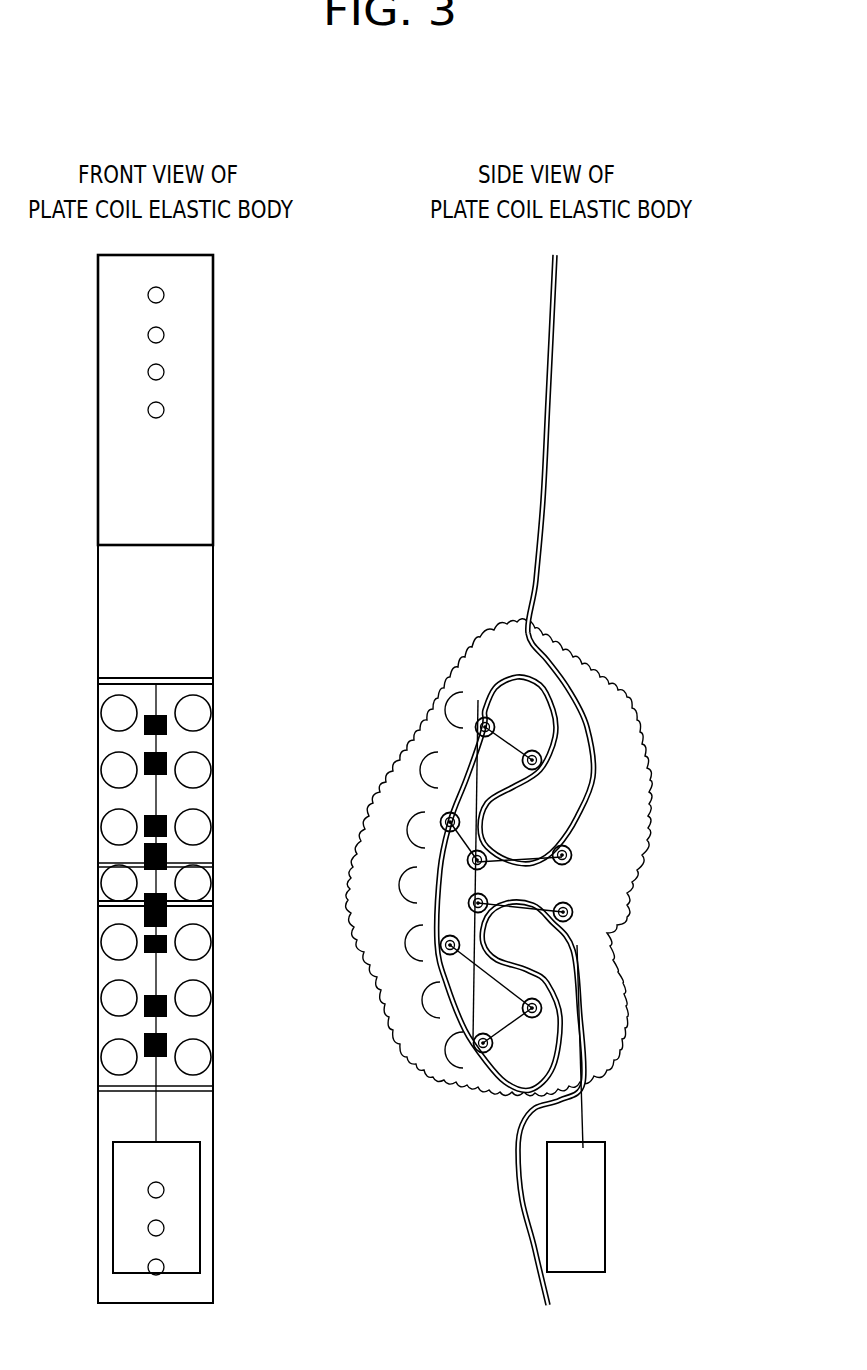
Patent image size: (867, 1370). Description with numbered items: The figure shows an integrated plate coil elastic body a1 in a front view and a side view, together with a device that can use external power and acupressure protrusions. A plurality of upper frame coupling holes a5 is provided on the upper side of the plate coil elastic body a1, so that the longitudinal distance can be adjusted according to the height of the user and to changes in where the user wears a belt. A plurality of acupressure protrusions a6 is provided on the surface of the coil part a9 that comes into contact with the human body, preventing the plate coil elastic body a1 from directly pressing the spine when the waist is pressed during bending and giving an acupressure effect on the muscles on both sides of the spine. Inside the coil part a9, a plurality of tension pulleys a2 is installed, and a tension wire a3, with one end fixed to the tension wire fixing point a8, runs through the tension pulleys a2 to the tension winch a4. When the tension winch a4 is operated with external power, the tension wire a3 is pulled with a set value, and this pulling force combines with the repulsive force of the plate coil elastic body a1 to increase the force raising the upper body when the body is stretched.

The plate coil elastic body a1 is at (543, 573).
The tension pulleys a2 is at (567, 908).
The tension wire a3 is at (577, 950).
The tension winch a4 is at (183, 1245).
The upper frame coupling holes a5 is at (157, 337).
The acupressure protrusions a6 is at (203, 830).
The tension wire fixing point a8 is at (566, 850).
The coil part a9 is at (628, 723).